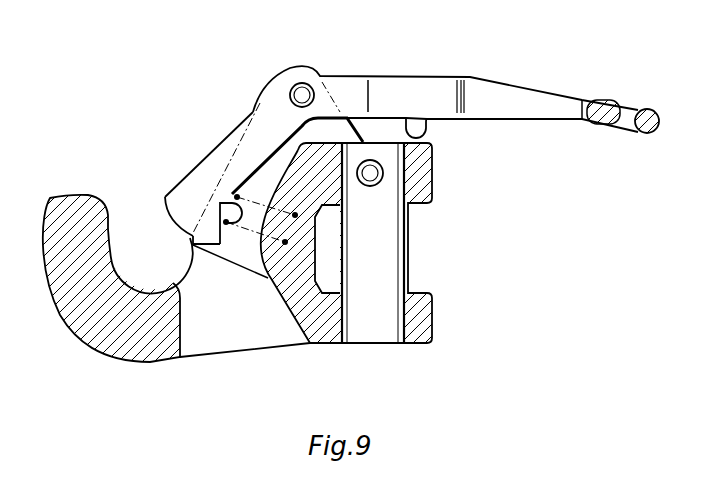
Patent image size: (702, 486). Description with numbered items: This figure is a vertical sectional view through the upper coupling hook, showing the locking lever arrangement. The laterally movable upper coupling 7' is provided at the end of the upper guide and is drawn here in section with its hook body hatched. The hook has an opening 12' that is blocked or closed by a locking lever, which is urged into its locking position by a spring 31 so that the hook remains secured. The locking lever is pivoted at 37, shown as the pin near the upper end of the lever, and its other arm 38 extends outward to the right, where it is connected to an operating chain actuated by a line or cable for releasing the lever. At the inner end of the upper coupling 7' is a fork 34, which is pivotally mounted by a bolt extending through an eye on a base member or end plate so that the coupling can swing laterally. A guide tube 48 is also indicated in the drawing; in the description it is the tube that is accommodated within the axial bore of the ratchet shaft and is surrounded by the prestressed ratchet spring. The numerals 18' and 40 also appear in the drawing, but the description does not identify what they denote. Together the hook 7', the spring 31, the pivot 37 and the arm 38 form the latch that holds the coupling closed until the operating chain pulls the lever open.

The upper coupling 7' is at (101, 252).
The opening 12' is at (131, 321).
The operating lever 18' is at (445, 80).
The pivot 37 is at (297, 86).
The other arm 38 is at (636, 112).
The guide tube 48 is at (417, 131).
The locking pin 40 is at (232, 213).
The spring 31 is at (285, 243).
The fork 34 is at (428, 346).